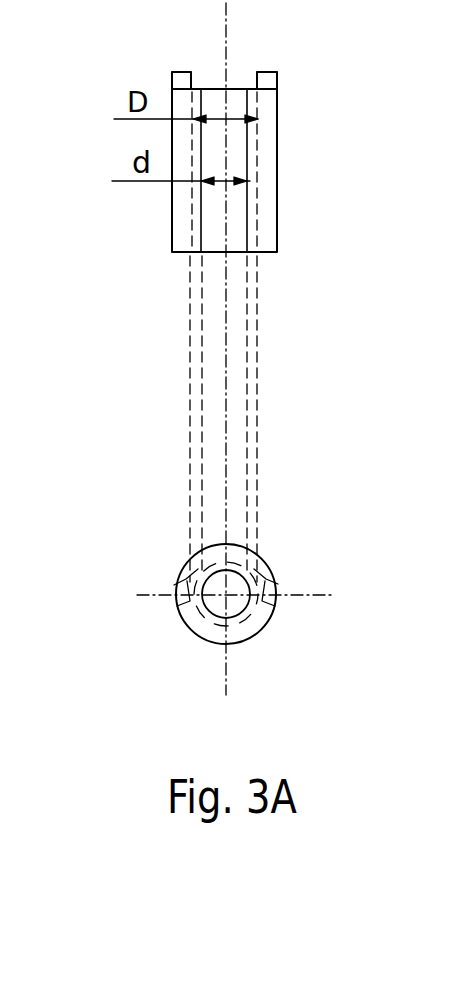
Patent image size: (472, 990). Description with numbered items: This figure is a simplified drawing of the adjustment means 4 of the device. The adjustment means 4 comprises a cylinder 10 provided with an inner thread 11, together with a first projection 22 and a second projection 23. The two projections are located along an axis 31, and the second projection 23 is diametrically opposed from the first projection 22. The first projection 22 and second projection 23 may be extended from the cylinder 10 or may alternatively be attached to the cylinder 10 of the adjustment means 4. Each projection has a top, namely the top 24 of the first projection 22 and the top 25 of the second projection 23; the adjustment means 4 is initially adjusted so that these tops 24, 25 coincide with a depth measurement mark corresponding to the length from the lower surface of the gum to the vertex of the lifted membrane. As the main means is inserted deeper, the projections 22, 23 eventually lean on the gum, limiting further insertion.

The adjustment means 4 is at (188, 212).
The cylinder 10 is at (275, 143).
The inner thread 11 is at (257, 214).
The first projection 22 is at (268, 80).
The second projection 23 is at (173, 76).
The top of the first projection 24 is at (268, 72).
The top of the second projection 25 is at (183, 72).
The axis 31 is at (310, 596).